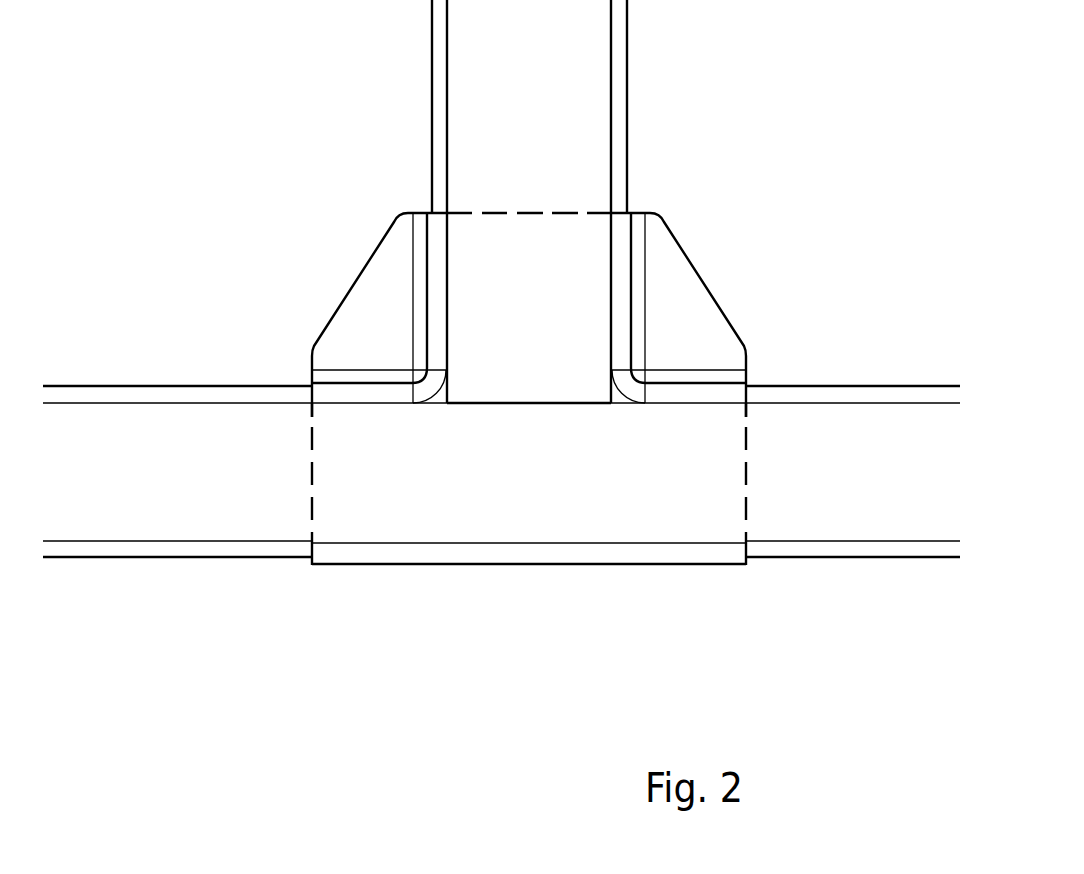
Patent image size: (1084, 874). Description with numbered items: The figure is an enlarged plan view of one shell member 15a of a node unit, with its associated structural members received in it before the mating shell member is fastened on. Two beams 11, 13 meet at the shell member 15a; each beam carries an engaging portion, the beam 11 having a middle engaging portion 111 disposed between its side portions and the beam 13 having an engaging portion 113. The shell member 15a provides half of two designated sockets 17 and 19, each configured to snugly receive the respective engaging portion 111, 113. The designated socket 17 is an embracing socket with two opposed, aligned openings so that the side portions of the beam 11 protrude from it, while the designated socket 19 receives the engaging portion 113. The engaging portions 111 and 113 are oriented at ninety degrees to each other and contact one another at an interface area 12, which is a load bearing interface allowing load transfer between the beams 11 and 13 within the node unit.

The beam 11 is at (221, 558).
The engaging portion 111 is at (430, 493).
The interface area 12 is at (529, 403).
The beam 13 is at (432, 48).
The engaging portion 113 is at (505, 293).
The shell member 15a is at (318, 295).
The designated socket 17 is at (769, 480).
The designated socket 19 is at (630, 210).